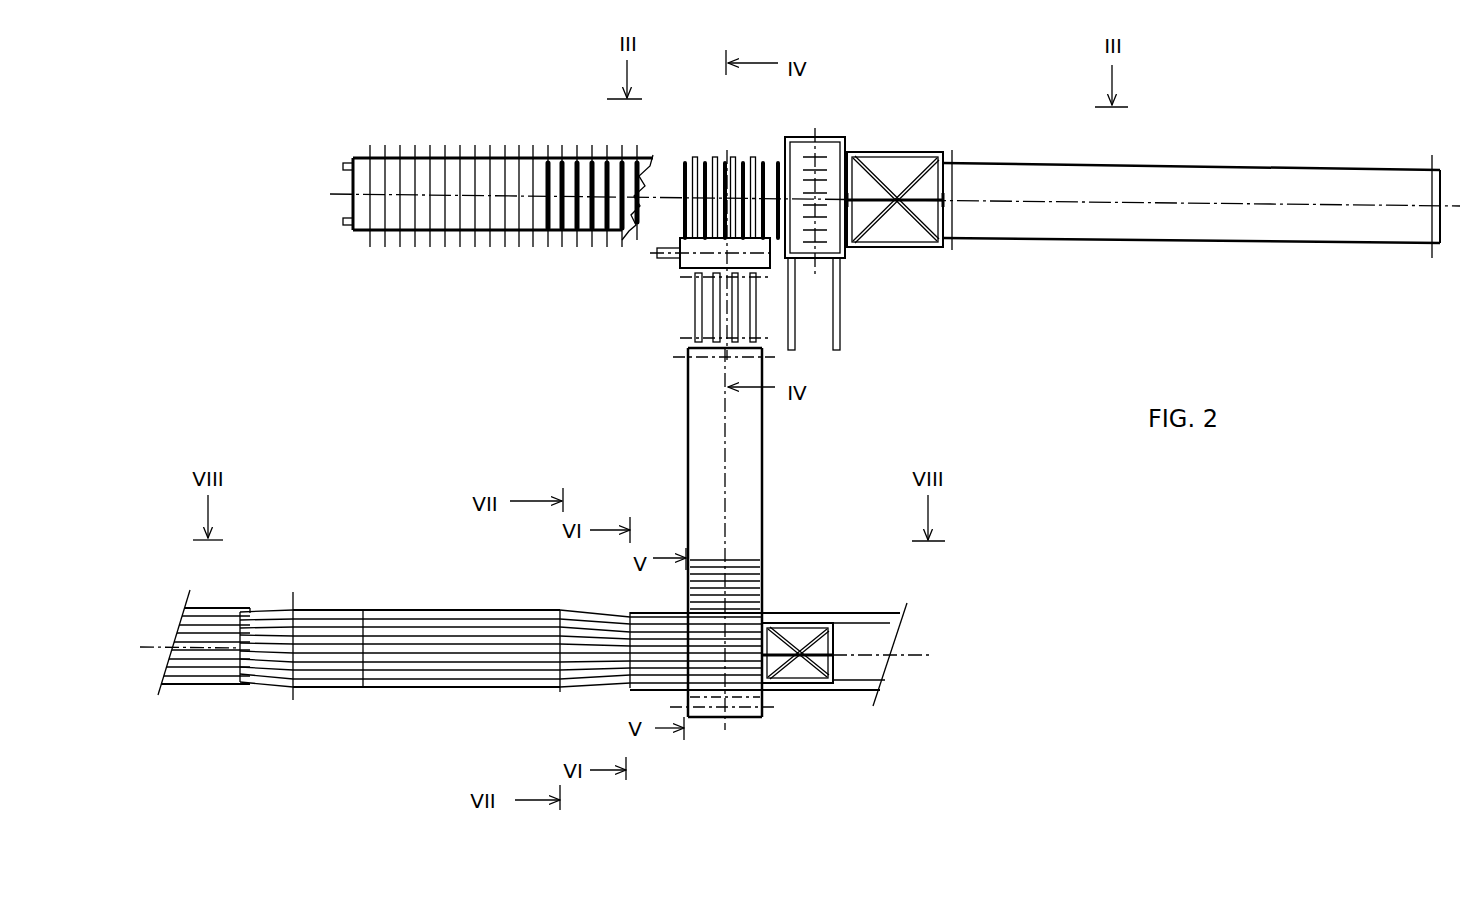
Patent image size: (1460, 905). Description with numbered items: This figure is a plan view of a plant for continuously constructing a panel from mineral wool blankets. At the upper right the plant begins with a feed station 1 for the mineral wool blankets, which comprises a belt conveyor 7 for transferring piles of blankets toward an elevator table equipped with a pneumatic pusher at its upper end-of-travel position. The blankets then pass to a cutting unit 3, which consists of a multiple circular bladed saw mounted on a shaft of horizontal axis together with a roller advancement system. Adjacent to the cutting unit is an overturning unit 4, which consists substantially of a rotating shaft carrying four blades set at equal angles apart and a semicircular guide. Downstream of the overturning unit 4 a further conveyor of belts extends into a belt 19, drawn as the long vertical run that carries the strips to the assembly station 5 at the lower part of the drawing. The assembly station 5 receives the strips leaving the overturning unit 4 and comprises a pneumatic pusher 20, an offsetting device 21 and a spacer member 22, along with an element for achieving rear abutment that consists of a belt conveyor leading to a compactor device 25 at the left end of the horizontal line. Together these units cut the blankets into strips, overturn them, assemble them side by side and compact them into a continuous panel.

The feed station 1 is at (900, 150).
The cutting unit 3 is at (850, 258).
The overturning unit 4 is at (698, 255).
The assembling station 5 is at (777, 613).
The belt conveyor 7 is at (1238, 183).
The belt 19 is at (703, 458).
The pneumatic pusher 20 is at (805, 695).
The offsetting device 21 is at (662, 690).
The spacer member 22 is at (585, 688).
The compactor device 25 is at (252, 683).